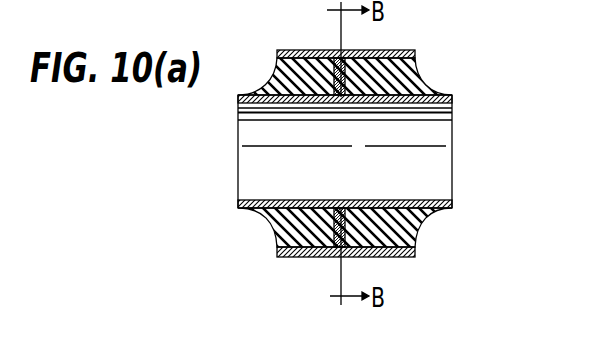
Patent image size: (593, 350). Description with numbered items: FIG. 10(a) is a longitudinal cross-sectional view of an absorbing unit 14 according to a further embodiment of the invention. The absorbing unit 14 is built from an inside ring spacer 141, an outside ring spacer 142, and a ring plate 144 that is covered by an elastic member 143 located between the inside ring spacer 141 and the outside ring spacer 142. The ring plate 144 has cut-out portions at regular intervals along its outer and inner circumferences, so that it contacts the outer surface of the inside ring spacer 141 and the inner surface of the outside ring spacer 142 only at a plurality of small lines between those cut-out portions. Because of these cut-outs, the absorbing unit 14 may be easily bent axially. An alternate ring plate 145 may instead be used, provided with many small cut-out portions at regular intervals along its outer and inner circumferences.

The absorbing unit 14 is at (352, 175).
The inside ring spacer 141 is at (453, 209).
The outside ring spacer 142 is at (397, 258).
The elastic member 143 is at (418, 228).
The ring plate 144 is at (291, 184).
The ring plate 145 is at (328, 248).